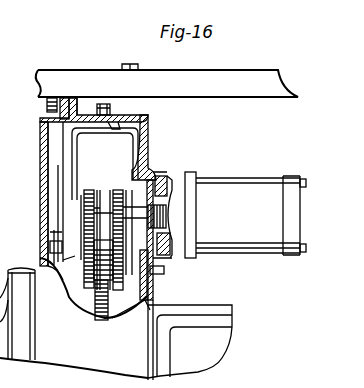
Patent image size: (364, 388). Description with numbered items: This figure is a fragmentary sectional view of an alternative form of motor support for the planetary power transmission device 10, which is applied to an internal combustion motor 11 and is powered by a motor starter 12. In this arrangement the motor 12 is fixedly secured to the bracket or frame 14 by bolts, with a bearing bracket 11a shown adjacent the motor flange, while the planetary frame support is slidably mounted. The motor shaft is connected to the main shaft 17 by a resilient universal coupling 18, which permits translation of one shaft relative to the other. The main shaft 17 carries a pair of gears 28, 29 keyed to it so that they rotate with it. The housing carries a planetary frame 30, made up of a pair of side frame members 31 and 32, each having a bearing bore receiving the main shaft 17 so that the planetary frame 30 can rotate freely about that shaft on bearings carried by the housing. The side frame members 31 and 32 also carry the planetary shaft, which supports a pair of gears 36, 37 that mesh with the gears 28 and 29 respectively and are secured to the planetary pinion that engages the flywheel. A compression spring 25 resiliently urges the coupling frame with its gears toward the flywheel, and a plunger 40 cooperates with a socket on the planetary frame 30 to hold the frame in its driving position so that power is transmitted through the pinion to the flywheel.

The planetary power transmission device 10 is at (42, 207).
The internal combustion motor 11 is at (222, 339).
The bearing bracket 11a is at (188, 160).
The motor starter 12 is at (270, 168).
The bracket 14 is at (149, 139).
The main shaft 17 is at (100, 213).
The resilient universal coupling 18 is at (172, 208).
The compression spring 25 is at (105, 125).
The gear 28 is at (86, 190).
The gear 29 is at (121, 190).
The planetary frame 30 is at (74, 192).
The side frame member 31 is at (68, 284).
The side frame member 32 is at (158, 275).
The gear 36 is at (86, 292).
The gear 37 is at (152, 293).
The plunger 40 is at (44, 246).